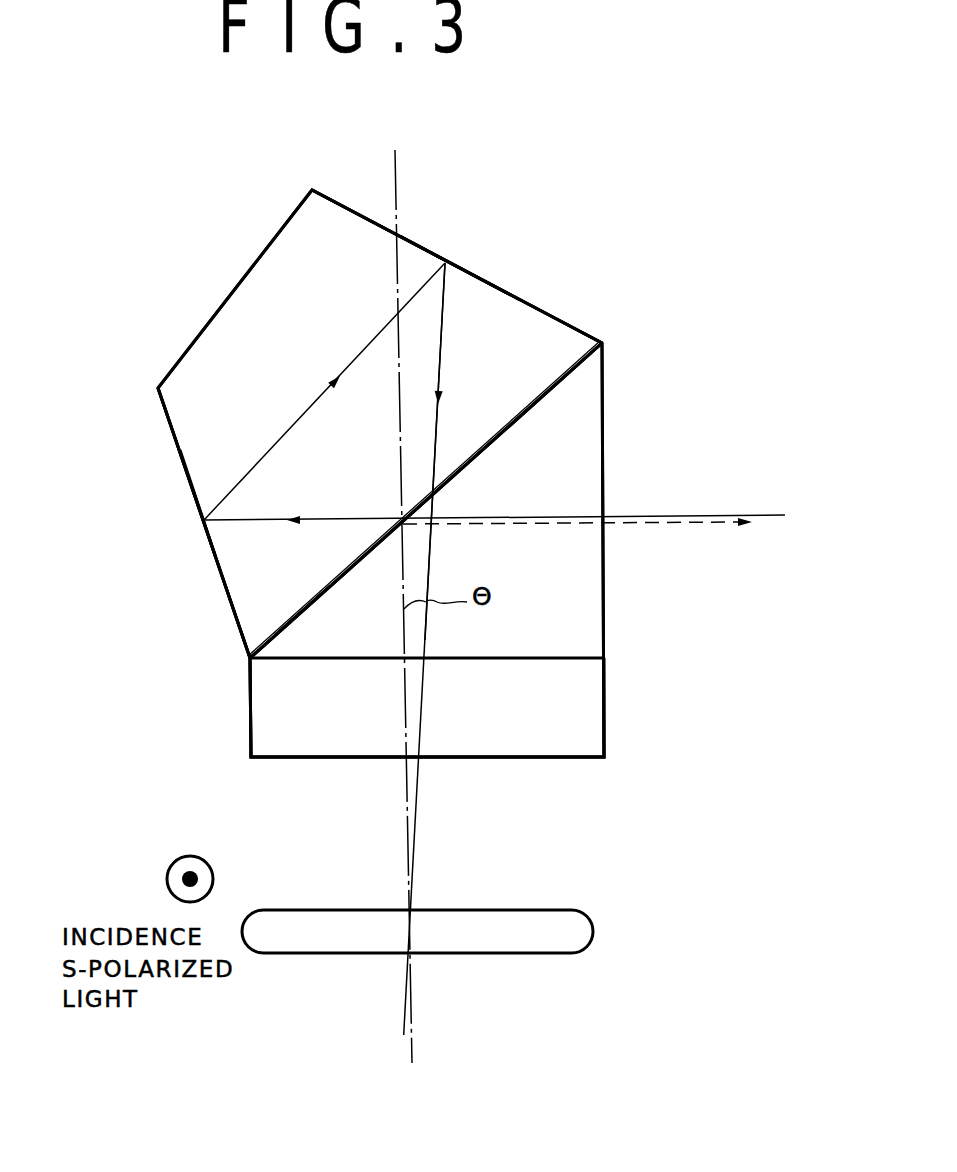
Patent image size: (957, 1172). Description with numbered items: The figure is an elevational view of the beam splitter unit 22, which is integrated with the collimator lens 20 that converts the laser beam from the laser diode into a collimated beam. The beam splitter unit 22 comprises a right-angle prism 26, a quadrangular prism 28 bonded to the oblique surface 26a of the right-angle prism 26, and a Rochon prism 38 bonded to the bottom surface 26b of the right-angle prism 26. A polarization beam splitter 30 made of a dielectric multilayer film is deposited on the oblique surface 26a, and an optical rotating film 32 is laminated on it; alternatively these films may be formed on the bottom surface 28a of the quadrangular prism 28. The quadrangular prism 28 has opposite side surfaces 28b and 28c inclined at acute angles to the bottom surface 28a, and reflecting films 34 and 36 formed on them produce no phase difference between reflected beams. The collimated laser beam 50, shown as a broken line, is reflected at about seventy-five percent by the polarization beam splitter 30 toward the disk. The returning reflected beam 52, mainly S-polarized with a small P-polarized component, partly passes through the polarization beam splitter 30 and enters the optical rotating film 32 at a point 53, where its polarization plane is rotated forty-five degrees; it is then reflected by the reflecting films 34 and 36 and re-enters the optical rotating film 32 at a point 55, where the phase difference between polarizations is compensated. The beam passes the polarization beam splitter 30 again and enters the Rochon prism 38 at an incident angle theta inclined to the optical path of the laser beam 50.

The collimator lens 20 is at (567, 911).
The beam splitter unit 22 is at (534, 290).
The right-angle prism 26 is at (605, 577).
The oblique surface 26a is at (562, 372).
The bottom surface 26b is at (545, 655).
The quadrangular prism 28 is at (244, 277).
The bottom surface 28a is at (547, 396).
The side surface 28b is at (183, 463).
The side surface 28c is at (412, 240).
The polarization beam splitter 30 is at (294, 626).
The optical rotating film 32 is at (300, 608).
The reflecting film 34 is at (198, 516).
The reflecting film 36 is at (478, 275).
The Rochon prism 38 is at (603, 703).
The laser beam 50 is at (416, 1000).
The reflected beam 52 is at (698, 514).
The point 53 is at (398, 514).
The point 55 is at (428, 487).